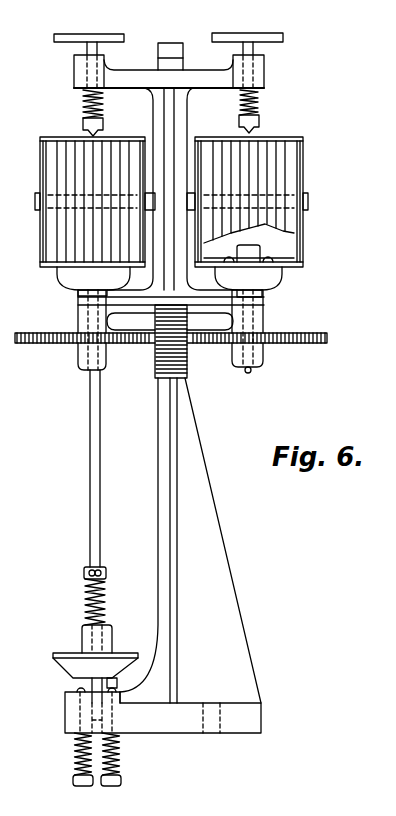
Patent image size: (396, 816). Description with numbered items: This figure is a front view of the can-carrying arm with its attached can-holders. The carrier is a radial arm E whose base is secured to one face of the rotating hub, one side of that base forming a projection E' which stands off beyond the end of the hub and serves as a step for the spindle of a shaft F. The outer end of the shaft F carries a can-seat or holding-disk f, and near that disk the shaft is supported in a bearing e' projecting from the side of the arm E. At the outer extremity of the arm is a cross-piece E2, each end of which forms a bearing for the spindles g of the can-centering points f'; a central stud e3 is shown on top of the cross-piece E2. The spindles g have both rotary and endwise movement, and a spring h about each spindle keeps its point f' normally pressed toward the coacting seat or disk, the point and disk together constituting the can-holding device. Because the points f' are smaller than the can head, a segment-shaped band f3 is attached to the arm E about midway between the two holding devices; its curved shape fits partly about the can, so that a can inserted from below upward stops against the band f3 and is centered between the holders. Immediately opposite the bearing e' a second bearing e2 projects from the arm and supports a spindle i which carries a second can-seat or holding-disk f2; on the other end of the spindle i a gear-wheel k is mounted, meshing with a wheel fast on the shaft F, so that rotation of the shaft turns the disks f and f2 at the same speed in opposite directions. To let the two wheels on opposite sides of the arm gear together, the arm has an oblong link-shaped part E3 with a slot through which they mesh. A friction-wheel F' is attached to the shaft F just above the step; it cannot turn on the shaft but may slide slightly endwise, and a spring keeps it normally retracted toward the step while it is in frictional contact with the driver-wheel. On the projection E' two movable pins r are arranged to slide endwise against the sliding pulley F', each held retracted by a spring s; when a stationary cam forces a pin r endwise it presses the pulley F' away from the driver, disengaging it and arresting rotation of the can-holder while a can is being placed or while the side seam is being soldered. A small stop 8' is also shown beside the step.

The thumb head of adjusting screw q' is at (168, 28).
The spindle g is at (87, 50).
The cross-piece E2 is at (216, 76).
The pivot stud e3 is at (173, 49).
The spring h is at (103, 108).
The can-centering point f' is at (180, 124).
The segment-shaped band f3 is at (105, 606).
The can-seat or holding-disk f is at (85, 281).
The can-seat or holding-disk f2 is at (250, 279).
The radial arm E is at (171, 395).
The oblong link-shaped part E3 is at (172, 347).
The bearing e' is at (80, 330).
The second bearing e2 is at (263, 318).
The gear-wheel k is at (55, 343).
The spindle i is at (247, 380).
The shaft F is at (99, 474).
The friction-wheel F' is at (88, 664).
The stop 8' is at (119, 687).
The projection E' is at (163, 710).
The spring s is at (76, 760).
The movable pin r is at (124, 756).